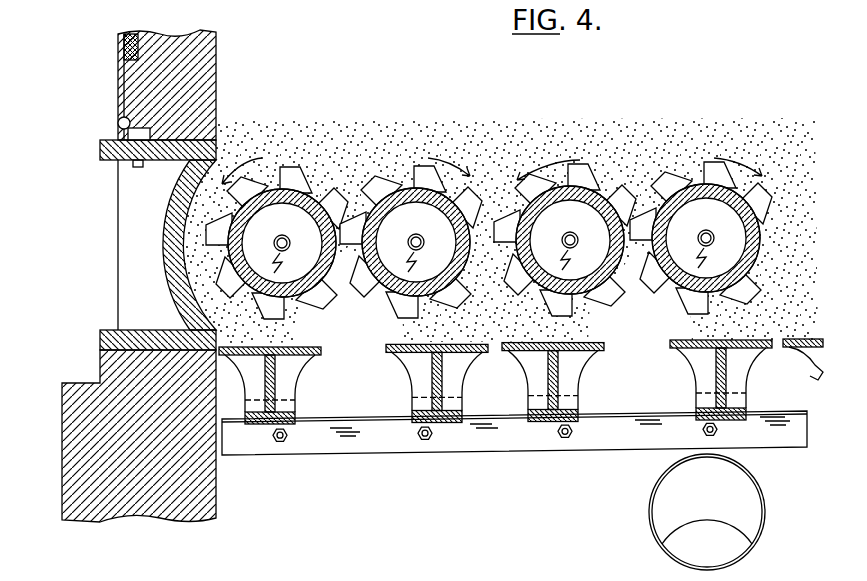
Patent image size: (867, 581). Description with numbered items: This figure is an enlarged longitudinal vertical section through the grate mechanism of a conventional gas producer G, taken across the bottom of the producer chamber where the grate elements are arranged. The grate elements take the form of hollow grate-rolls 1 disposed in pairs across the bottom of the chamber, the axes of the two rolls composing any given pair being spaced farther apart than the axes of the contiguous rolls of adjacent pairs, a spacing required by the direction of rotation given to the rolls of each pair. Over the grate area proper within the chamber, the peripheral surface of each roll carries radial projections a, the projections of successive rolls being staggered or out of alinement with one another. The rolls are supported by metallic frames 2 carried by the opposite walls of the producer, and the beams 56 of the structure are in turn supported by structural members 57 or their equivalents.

The gas producer G is at (130, 72).
The metallic frame 2 is at (130, 180).
The grate-roll 1 is at (284, 192).
The radial projections a is at (285, 168).
The beam 56 is at (410, 355).
The structural member 57 is at (497, 440).